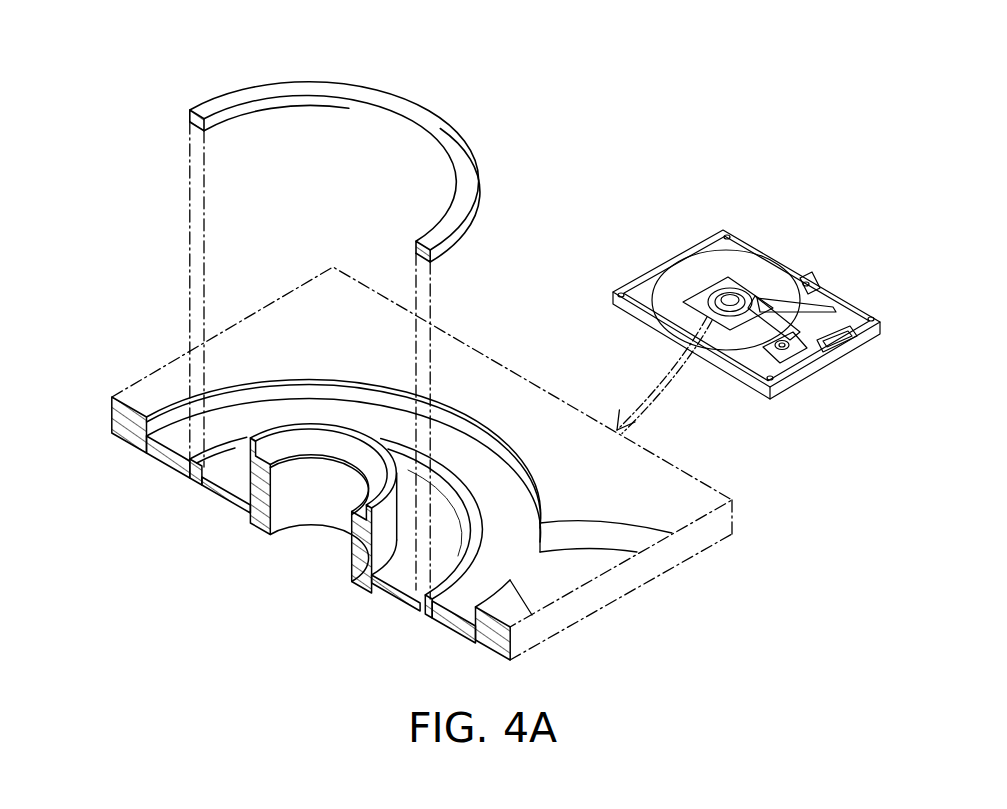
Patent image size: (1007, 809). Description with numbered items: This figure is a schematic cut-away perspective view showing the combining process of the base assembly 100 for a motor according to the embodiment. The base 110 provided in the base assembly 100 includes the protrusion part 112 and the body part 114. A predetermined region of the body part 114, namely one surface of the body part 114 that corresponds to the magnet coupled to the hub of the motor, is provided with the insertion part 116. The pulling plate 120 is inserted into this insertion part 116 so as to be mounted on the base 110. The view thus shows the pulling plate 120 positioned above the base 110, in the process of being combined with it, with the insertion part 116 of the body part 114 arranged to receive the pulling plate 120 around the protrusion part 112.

The base assembly 100 is at (546, 61).
The base 110 is at (800, 253).
The protrusion part 112 is at (245, 517).
The body part 114 is at (142, 452).
The insertion part 116 is at (436, 604).
The pulling plate 120 is at (178, 100).